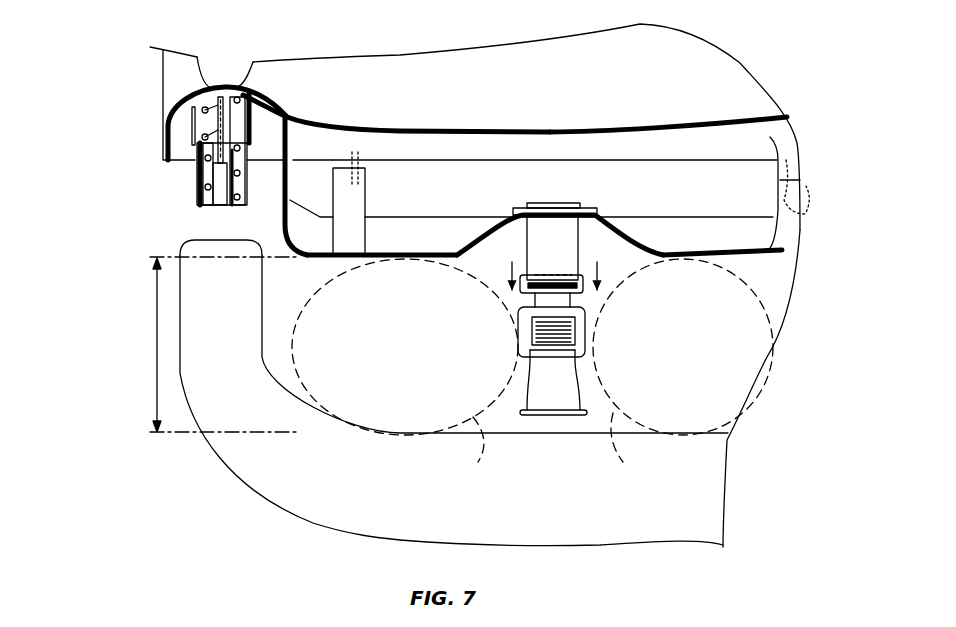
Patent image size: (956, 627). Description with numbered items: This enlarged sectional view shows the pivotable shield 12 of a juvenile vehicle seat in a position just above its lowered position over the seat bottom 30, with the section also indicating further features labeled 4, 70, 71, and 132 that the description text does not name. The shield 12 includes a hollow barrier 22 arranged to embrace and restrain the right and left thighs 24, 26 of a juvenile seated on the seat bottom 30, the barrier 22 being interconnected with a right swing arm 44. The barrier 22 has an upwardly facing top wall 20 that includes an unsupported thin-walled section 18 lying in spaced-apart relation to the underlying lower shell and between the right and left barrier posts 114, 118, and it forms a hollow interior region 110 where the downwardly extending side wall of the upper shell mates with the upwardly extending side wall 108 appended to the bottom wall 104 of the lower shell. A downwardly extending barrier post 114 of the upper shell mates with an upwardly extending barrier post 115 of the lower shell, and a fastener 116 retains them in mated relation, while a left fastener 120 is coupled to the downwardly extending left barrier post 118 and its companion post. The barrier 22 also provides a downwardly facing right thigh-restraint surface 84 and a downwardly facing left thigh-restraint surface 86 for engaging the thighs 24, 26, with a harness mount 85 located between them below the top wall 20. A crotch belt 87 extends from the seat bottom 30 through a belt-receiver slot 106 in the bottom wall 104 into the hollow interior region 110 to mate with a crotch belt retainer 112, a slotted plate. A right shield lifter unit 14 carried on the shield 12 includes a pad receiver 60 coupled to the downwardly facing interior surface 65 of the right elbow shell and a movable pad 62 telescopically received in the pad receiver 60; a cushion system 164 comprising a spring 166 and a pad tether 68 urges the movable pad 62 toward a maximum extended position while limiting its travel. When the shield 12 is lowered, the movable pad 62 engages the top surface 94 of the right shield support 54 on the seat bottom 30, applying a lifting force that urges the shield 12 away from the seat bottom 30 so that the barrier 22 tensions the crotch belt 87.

The seat belt buckle tongue 4 is at (540, 427).
The pivotable shield 12 is at (252, 62).
The right shield lifter unit 14 is at (178, 172).
The unsupported thin-walled section 18 is at (432, 128).
The top wall 20 is at (521, 117).
The hollow barrier 22 is at (673, 117).
The right thigh 24 is at (492, 451).
The left thigh 26 is at (606, 447).
The seat bottom 30 is at (203, 455).
The right swing arm 44 is at (163, 69).
The right shield support 54 is at (199, 310).
The pad receiver 60 is at (262, 107).
The movable pad 62 is at (249, 193).
The interior surface 65 is at (232, 116).
The pad tether 68 is at (212, 118).
The recess 70 is at (212, 71).
The housing bottom wall 71 is at (203, 207).
The right thigh-restraint surface 84 is at (400, 257).
The harness mount 85 is at (598, 234).
The left thigh-restraint surface 86 is at (692, 258).
The crotch belt 87 is at (512, 339).
The top surface 94 is at (225, 203).
The bottom wall 104 is at (314, 261).
The belt-receiver slot 106 is at (534, 222).
The upwardly extending side wall 108 is at (410, 243).
The hollow interior region 110 is at (635, 150).
The crotch belt retainer 112 is at (522, 210).
The downwardly extending barrier post 114 is at (357, 150).
The upwardly extending barrier post 115 is at (362, 197).
The fastener 116 is at (335, 192).
The downwardly extending left barrier post 118 is at (783, 142).
The left fastener 120 is at (806, 222).
The end wall lower portion 132 is at (790, 224).
The cushion system 164 is at (197, 125).
The spring 166 is at (205, 103).